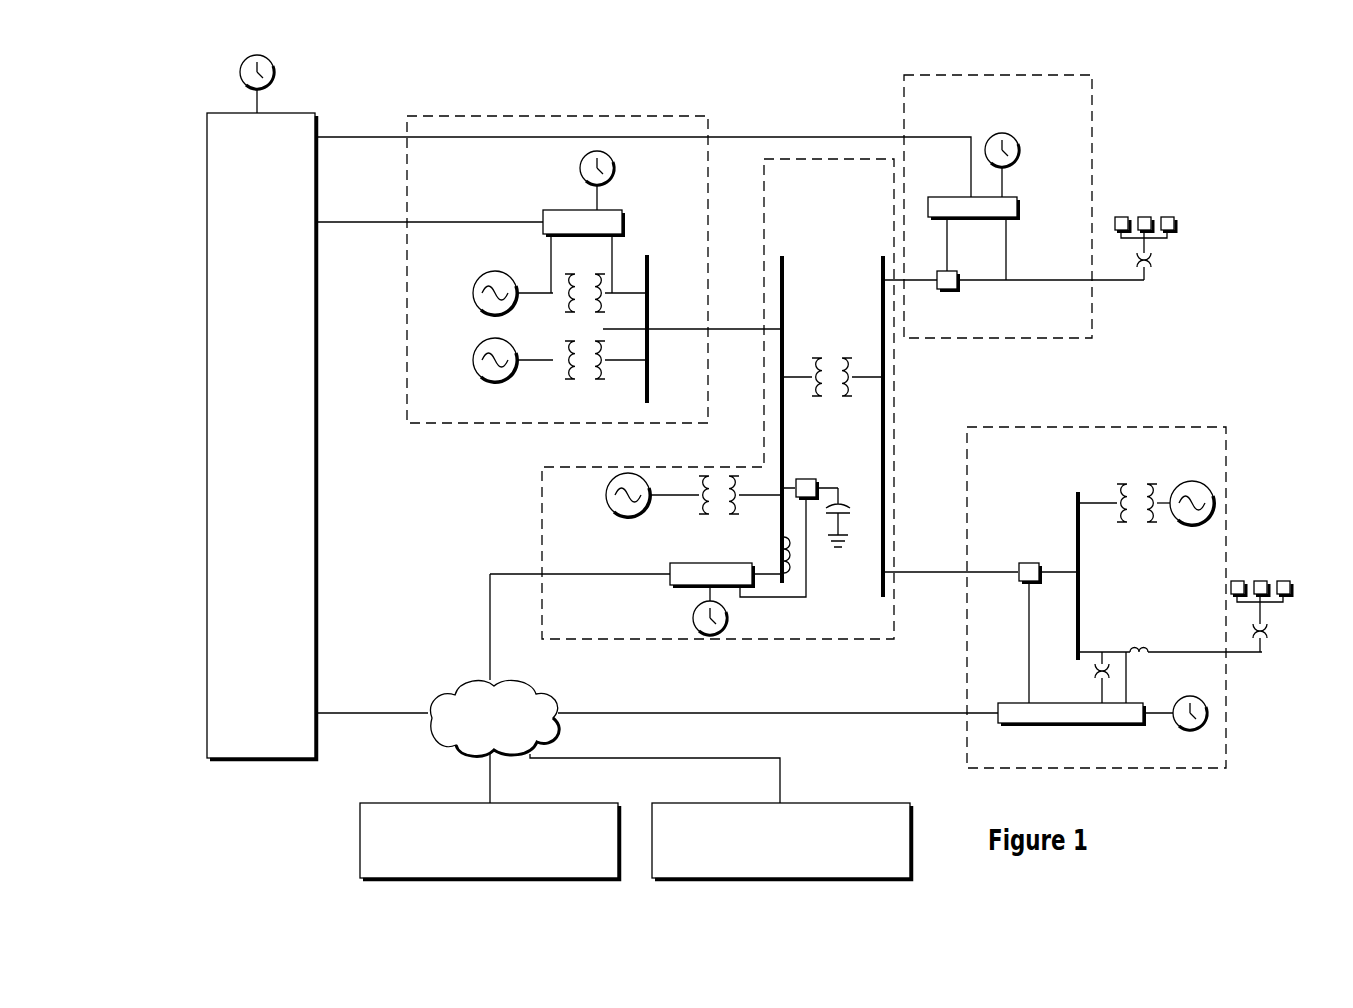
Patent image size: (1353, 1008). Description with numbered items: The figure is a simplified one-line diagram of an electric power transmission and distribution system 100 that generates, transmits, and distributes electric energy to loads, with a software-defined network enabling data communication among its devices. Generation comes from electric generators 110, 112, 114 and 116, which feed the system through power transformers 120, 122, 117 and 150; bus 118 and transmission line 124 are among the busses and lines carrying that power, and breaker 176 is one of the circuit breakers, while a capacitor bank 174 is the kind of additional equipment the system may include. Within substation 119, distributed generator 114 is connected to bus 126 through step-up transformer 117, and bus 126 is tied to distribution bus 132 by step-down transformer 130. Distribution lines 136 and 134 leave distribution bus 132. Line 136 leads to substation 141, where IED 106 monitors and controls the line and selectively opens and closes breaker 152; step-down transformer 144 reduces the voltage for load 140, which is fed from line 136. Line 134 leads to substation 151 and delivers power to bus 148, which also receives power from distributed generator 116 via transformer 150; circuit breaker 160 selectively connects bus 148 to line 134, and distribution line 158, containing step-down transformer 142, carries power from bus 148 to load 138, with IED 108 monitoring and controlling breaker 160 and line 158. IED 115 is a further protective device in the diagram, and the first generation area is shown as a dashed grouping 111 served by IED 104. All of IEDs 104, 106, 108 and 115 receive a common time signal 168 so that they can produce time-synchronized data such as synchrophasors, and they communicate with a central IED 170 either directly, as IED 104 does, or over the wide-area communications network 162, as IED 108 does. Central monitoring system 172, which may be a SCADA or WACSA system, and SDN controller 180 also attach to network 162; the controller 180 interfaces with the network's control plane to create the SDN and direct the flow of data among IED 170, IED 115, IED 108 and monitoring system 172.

The electric power transmission and distribution system 100 is at (766, 467).
The IED 104 is at (560, 210).
The IED 106 is at (944, 197).
The IED 108 is at (1114, 724).
The generator 110 is at (473, 293).
The substation 111 is at (500, 425).
The generator 112 is at (473, 360).
The generator 114 is at (606, 496).
The IED 115 is at (740, 563).
The distributed generator 116 is at (1181, 522).
The step-up transformer 117 is at (703, 509).
The bus 118 is at (651, 387).
The substation 119 is at (655, 640).
The power transformer 120 is at (563, 310).
The power transformer 122 is at (585, 382).
The power transmission line 124 is at (728, 331).
The bus 126 is at (786, 400).
The step-down transformer 130 is at (838, 358).
The distribution bus 132 is at (880, 560).
The distribution line 134 is at (985, 574).
The distribution line 136 is at (920, 283).
The load 138 is at (1257, 580).
The load 140 is at (1178, 222).
The substation 141 is at (1070, 340).
The step-down transformer 142 is at (1270, 640).
The step-down transformer 144 is at (1156, 262).
The bus 148 is at (1075, 493).
The transformer 150 is at (1141, 483).
The substation 151 is at (1165, 769).
The breaker 152 is at (960, 290).
The distribution line 158 is at (1162, 652).
The circuit breaker 160 is at (1027, 562).
The communications network 162 is at (605, 688).
The common time signal 168 is at (276, 72).
The central IED 170 is at (262, 436).
The central monitoring system 172 is at (490, 841).
The capacitor bank 174 is at (846, 506).
The breaker 176 is at (810, 479).
The SDN controller 180 is at (782, 841).